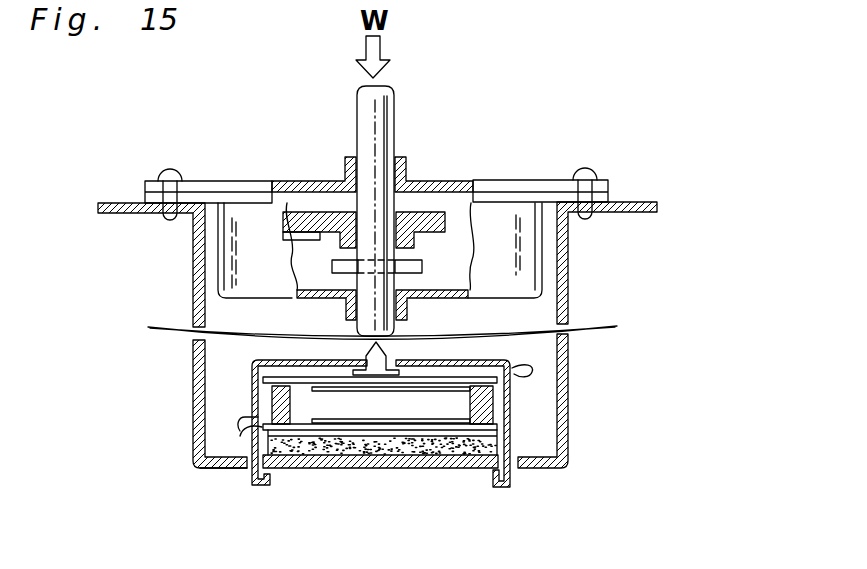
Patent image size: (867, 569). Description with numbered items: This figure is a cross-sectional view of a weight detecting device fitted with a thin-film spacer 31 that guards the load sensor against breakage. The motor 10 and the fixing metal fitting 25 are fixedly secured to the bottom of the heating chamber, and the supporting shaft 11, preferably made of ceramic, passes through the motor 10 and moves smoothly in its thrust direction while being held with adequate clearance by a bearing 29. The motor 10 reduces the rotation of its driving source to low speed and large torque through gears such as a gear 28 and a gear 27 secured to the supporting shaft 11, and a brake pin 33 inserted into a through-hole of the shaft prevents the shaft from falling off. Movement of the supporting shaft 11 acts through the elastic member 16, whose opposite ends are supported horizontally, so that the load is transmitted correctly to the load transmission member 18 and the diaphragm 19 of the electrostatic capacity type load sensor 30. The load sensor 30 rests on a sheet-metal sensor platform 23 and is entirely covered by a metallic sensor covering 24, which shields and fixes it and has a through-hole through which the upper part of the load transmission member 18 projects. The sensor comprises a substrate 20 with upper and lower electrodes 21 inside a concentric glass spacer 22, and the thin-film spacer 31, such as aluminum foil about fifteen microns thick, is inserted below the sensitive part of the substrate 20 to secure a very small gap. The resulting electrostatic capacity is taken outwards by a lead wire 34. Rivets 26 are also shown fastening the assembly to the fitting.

The motor 10 is at (502, 213).
The supporting shaft 11 is at (393, 103).
The elastic member 16 is at (598, 326).
The load transmission member 18 is at (378, 345).
The diaphragm 19 is at (482, 469).
The substrate 20 is at (458, 382).
The upper and lower electrodes 21 is at (335, 423).
The concentric glass spacer 22 is at (272, 397).
The sensor platform 23 is at (298, 450).
The sensor covering 24 is at (250, 447).
The fixing metal fitting 25 is at (560, 405).
The rivets 26 is at (165, 177).
The gear 27 is at (422, 217).
The gear 28 is at (290, 215).
The bearing 29 is at (407, 155).
The electrostatic capacity type load sensor 30 is at (403, 405).
The thin-film spacer 31 is at (533, 470).
The brake pin 33 is at (342, 268).
The lead wire 34 is at (535, 375).